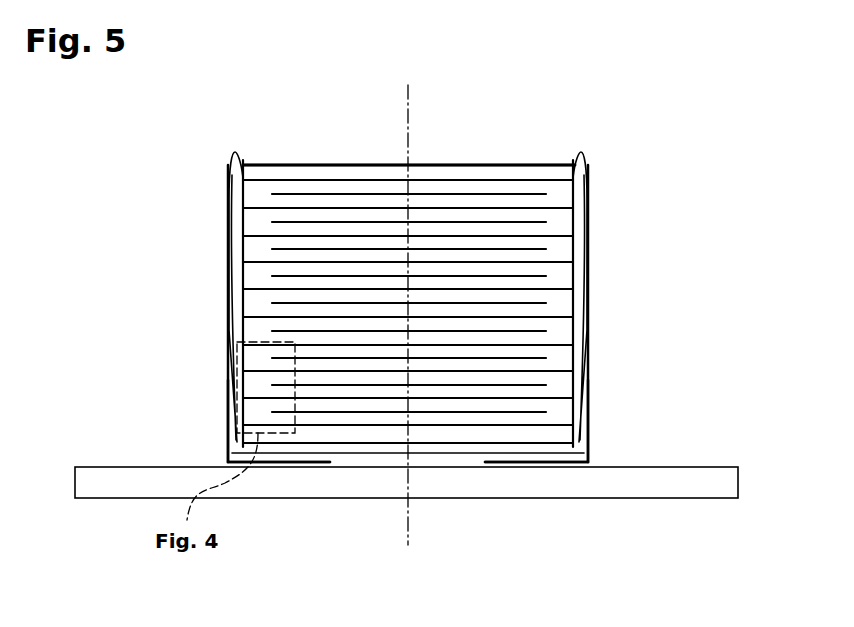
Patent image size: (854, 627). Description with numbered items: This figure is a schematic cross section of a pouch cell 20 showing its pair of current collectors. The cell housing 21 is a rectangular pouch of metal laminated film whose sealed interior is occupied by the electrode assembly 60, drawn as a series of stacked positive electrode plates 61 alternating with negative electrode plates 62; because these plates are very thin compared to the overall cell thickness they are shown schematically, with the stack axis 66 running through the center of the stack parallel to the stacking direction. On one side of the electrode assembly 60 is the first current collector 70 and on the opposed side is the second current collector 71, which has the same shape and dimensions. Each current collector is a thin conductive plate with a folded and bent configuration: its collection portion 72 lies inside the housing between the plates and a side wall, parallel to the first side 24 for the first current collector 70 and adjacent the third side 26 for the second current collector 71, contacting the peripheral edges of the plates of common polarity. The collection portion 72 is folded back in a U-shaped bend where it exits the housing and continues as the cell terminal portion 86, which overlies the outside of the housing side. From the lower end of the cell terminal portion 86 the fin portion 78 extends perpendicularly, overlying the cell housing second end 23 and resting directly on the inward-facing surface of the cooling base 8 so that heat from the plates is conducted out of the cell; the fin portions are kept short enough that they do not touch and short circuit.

The cooling base 8 is at (695, 467).
The cell 20 is at (256, 165).
The cell housing 21 is at (322, 165).
The second end 23 is at (383, 470).
The first side 24 is at (232, 293).
The third side 26 is at (588, 295).
The electrode assembly 60 is at (543, 165).
The positive electrode plates 61 is at (260, 270).
The negative electrode plates 62 is at (565, 192).
The stack axis 66 is at (408, 130).
The first current collector 70 is at (210, 168).
The second current collector 71 is at (593, 170).
The collection portion 72 is at (246, 334).
The fin portion 78 is at (280, 462).
The cell terminal portion 86 is at (228, 375).